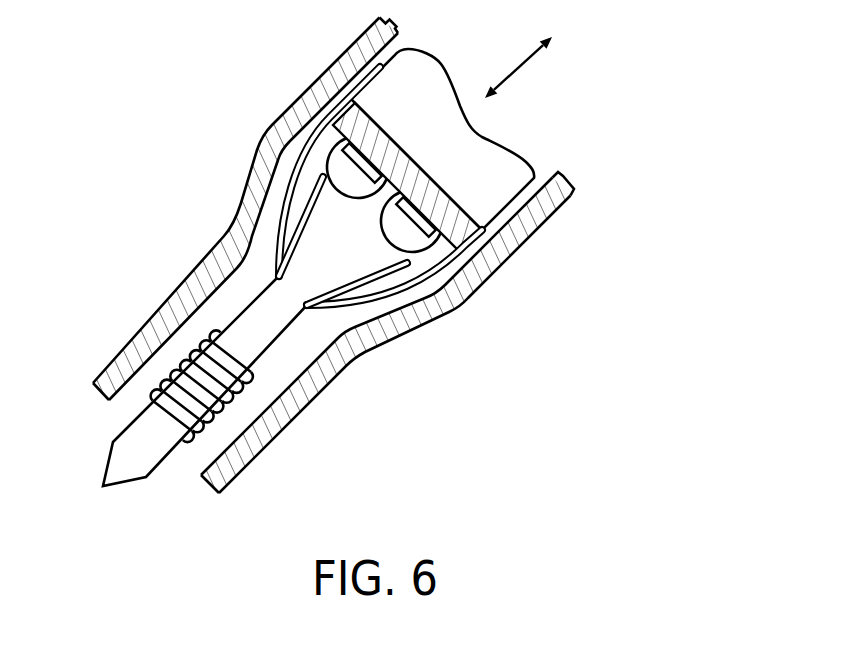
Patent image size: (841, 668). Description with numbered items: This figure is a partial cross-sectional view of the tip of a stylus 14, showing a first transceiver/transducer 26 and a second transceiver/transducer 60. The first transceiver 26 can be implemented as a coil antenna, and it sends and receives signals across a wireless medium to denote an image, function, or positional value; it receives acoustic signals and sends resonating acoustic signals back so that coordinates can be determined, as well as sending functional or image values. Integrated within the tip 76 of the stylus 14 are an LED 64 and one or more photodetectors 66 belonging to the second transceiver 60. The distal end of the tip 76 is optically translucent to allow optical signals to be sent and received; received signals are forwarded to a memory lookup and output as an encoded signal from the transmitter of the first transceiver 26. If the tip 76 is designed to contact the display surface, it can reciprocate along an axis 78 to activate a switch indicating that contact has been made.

The stylus 14 is at (649, 46).
The first transceiver/transducer 26 is at (236, 420).
The second transceiver/transducer 60 is at (422, 356).
The LED 64 is at (337, 190).
The photodetectors 66 is at (385, 223).
The tip 76 is at (106, 268).
The axis 78 is at (525, 64).